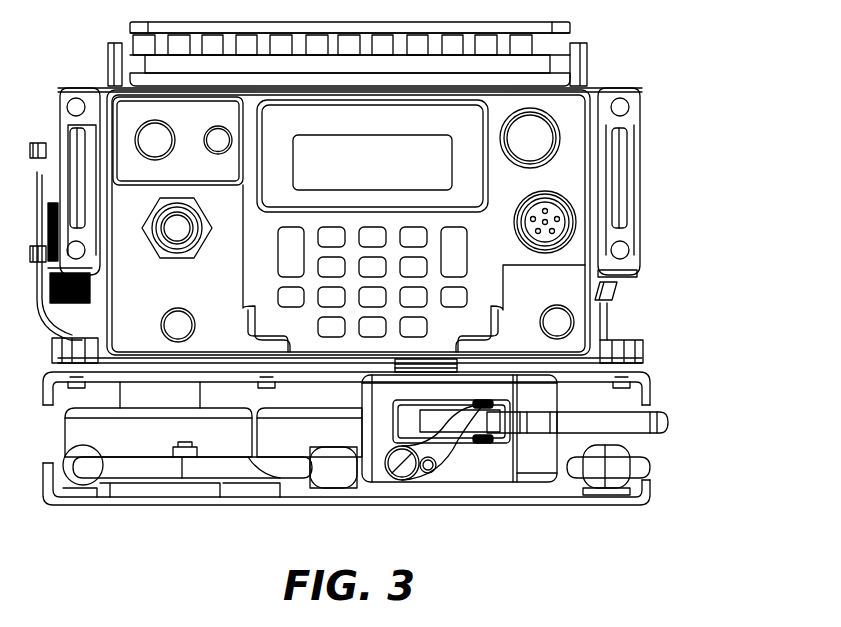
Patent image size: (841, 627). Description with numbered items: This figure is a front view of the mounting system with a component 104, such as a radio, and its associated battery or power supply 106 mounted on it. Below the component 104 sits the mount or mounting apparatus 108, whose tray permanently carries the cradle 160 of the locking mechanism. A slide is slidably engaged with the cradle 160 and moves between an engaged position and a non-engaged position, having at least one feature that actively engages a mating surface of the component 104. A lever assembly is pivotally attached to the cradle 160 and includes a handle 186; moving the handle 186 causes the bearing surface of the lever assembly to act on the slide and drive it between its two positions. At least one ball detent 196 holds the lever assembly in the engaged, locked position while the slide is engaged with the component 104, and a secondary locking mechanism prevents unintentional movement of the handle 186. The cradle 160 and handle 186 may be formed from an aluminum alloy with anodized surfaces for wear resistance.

The component 104 is at (578, 112).
The battery or power supply 106 is at (157, 62).
The mounting apparatus 108 is at (665, 362).
The cradle 160 is at (500, 463).
The handle 186 is at (627, 422).
The ball detent 196 is at (482, 413).